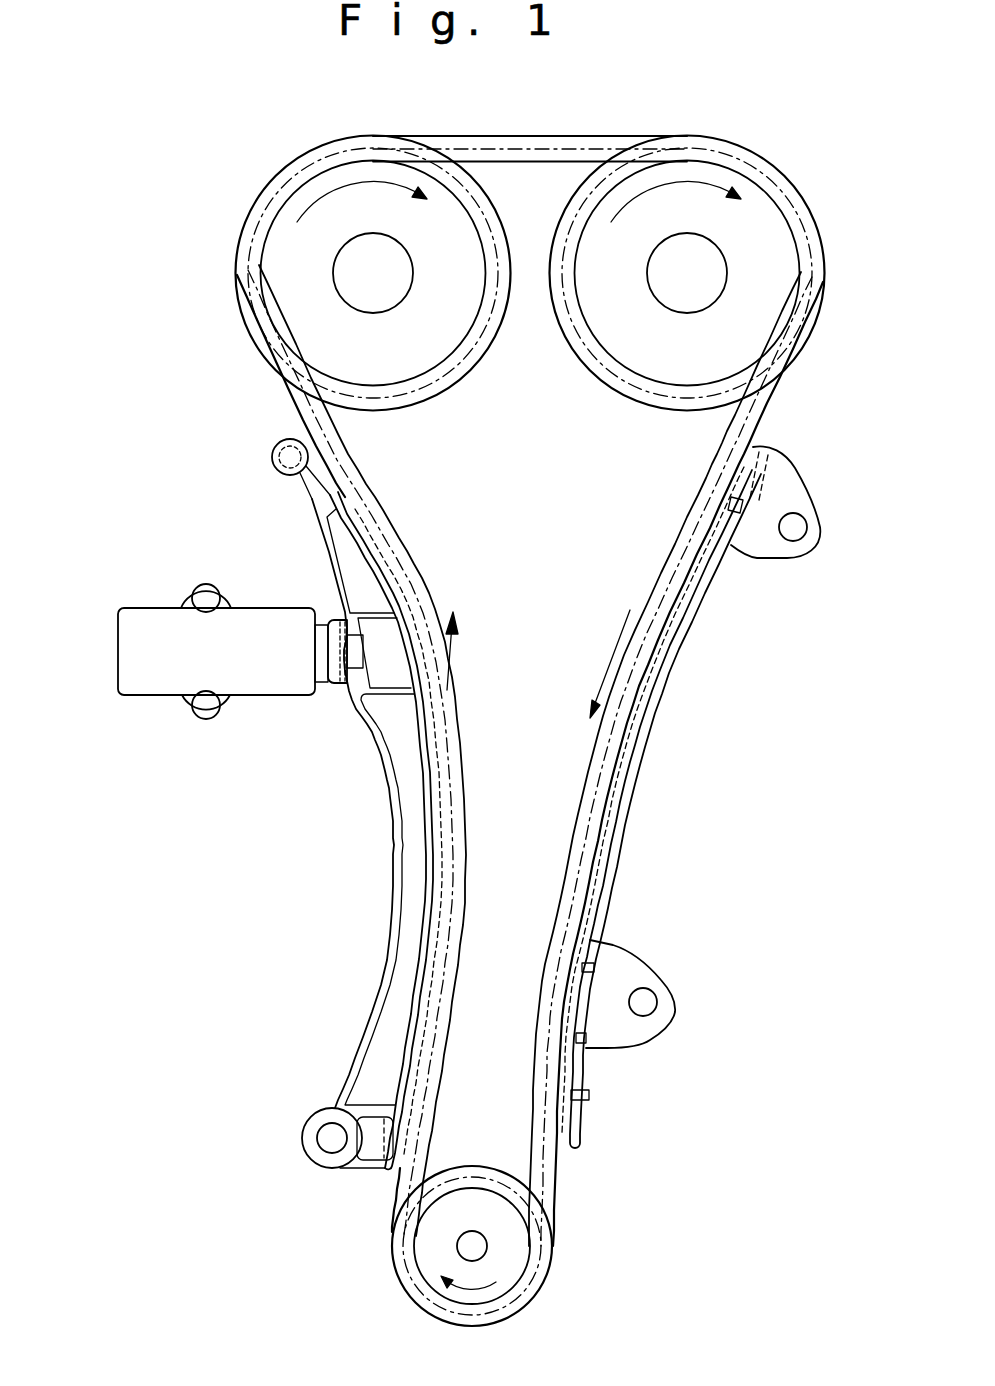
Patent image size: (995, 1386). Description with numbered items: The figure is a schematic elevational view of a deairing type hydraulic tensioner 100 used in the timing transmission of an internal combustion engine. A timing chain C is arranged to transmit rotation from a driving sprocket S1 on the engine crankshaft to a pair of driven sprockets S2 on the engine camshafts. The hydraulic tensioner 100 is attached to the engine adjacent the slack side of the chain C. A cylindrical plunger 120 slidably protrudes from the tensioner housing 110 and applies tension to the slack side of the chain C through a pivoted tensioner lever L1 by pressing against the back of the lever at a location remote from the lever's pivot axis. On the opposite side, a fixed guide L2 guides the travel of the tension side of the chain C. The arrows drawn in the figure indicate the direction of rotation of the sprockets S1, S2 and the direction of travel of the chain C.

The timing chain C is at (553, 136).
The driving sprocket S1 is at (520, 1258).
The driven sprockets S2 is at (402, 367).
The tensioner lever L1 is at (392, 878).
The fixed guide L2 is at (626, 823).
The deairing type hydraulic tensioner 100 is at (230, 537).
The tensioner housing 110 is at (153, 683).
The plunger 120 is at (330, 693).